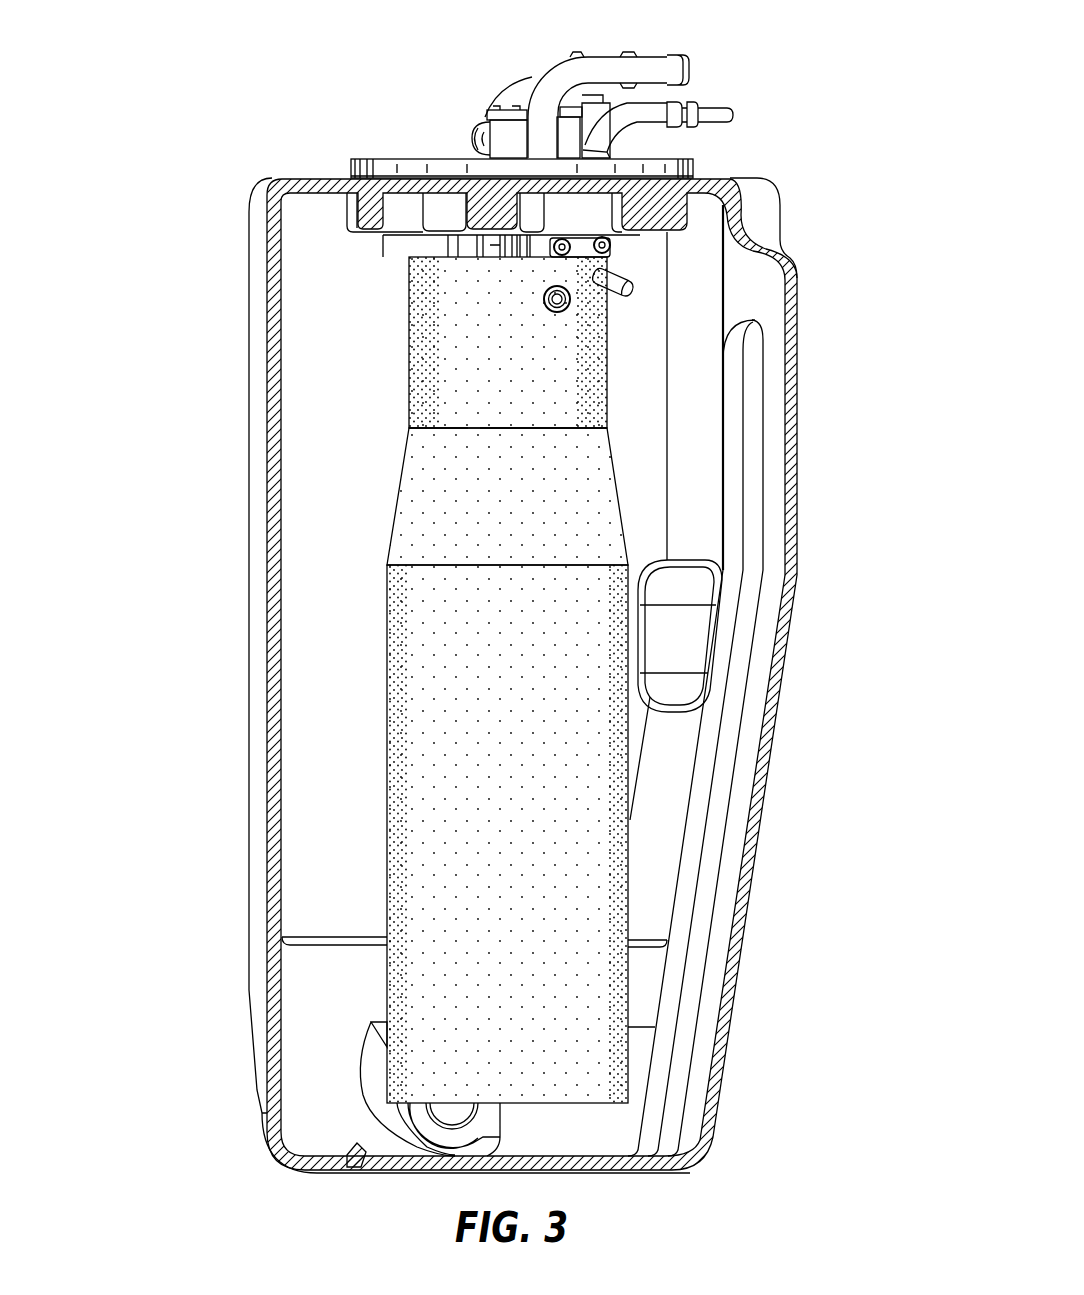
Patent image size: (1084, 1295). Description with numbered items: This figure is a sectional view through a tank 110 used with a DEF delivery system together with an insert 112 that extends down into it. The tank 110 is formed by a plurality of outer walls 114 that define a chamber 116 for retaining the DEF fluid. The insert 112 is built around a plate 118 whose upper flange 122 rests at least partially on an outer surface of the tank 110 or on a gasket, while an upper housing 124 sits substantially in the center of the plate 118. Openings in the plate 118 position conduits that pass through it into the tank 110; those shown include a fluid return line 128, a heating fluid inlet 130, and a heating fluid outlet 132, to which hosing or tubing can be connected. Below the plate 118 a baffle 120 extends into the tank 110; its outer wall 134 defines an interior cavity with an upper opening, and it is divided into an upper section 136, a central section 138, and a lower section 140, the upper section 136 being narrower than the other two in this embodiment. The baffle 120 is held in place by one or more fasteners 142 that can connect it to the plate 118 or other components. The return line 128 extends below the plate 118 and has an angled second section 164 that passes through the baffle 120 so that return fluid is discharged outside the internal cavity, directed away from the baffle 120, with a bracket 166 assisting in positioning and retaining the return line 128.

The tank 110 is at (237, 206).
The insert 112 is at (456, 108).
The outer walls 114 is at (260, 482).
The chamber 116 is at (317, 510).
The plate 118 is at (365, 151).
The baffle 120 is at (398, 321).
The upper flange 122 is at (350, 172).
The upper housing 124 is at (497, 108).
The fluid return line 128 is at (733, 115).
The heating fluid inlet 130 is at (541, 62).
The heating fluid outlet 132 is at (689, 78).
The outer wall 134 is at (386, 712).
The upper section 136 is at (417, 385).
The central section 138 is at (417, 535).
The lower section 140 is at (415, 862).
The fasteners 142 is at (563, 305).
The second section 164 is at (630, 291).
The bracket 166 is at (600, 252).